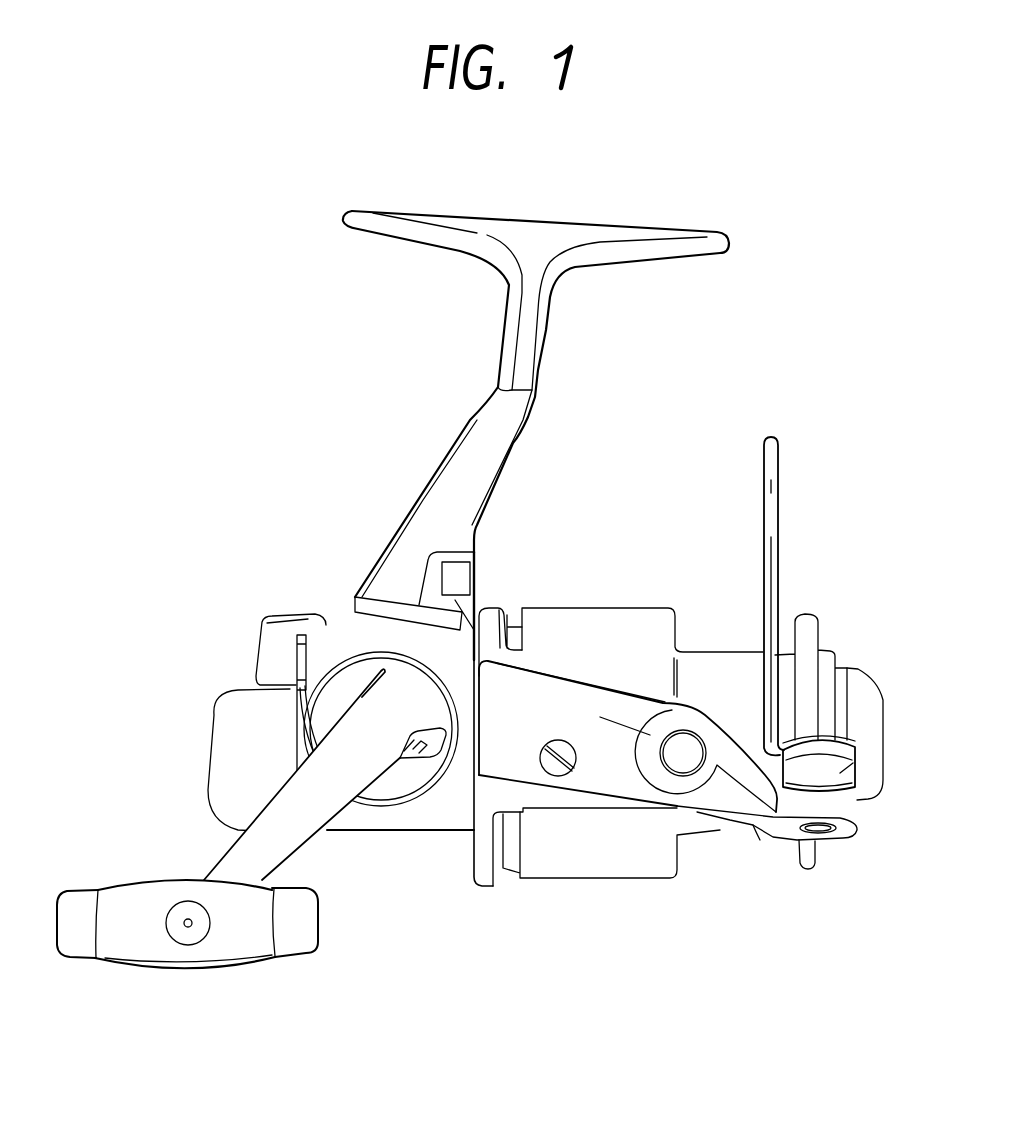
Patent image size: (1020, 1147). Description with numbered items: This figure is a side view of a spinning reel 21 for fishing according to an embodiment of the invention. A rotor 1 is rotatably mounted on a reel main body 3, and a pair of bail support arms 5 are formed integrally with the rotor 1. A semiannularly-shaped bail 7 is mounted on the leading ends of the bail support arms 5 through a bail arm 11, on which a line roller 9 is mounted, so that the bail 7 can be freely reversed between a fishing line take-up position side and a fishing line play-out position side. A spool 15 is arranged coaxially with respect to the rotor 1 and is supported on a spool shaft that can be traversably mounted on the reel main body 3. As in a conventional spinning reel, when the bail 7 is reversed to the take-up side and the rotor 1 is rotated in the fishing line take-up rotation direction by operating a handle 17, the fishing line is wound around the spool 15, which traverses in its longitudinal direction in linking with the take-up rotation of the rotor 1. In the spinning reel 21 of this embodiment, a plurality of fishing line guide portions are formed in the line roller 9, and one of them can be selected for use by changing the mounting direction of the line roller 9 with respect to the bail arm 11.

The spinning reel 21 is at (413, 471).
The reel main body 3 is at (383, 822).
The rotor 1 is at (512, 627).
The bail support arms 5 is at (577, 673).
The bail 7 is at (776, 565).
The line roller 9 is at (843, 773).
The bail arm 11 is at (760, 840).
The spool 15 is at (618, 863).
The handle 17 is at (220, 866).